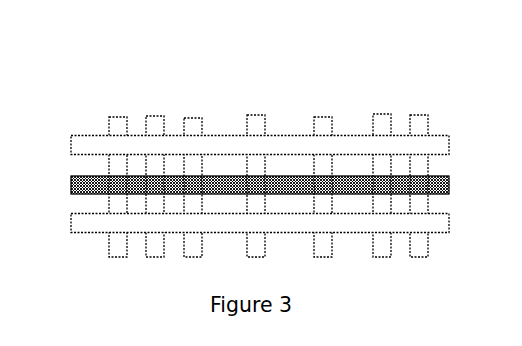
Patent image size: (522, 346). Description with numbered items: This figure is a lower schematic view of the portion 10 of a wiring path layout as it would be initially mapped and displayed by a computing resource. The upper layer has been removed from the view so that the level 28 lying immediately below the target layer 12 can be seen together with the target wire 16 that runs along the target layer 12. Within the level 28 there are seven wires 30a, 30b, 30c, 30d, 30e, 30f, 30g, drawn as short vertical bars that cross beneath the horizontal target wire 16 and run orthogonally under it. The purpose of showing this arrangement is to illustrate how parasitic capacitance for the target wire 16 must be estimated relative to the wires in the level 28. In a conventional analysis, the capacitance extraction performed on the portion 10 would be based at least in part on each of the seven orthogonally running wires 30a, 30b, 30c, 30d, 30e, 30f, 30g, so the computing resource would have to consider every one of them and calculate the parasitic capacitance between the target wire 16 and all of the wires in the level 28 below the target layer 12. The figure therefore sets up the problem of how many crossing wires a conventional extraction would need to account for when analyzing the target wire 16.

The portion 10 is at (233, 159).
The target layer 12 is at (90, 165).
The target wire 16 is at (349, 195).
The level 28 is at (139, 252).
The wire 30a is at (123, 117).
The wire 30b is at (153, 116).
The wire 30c is at (192, 118).
The wire 30d is at (253, 116).
The wire 30e is at (318, 118).
The wire 30f is at (375, 115).
The wire 30g is at (415, 116).